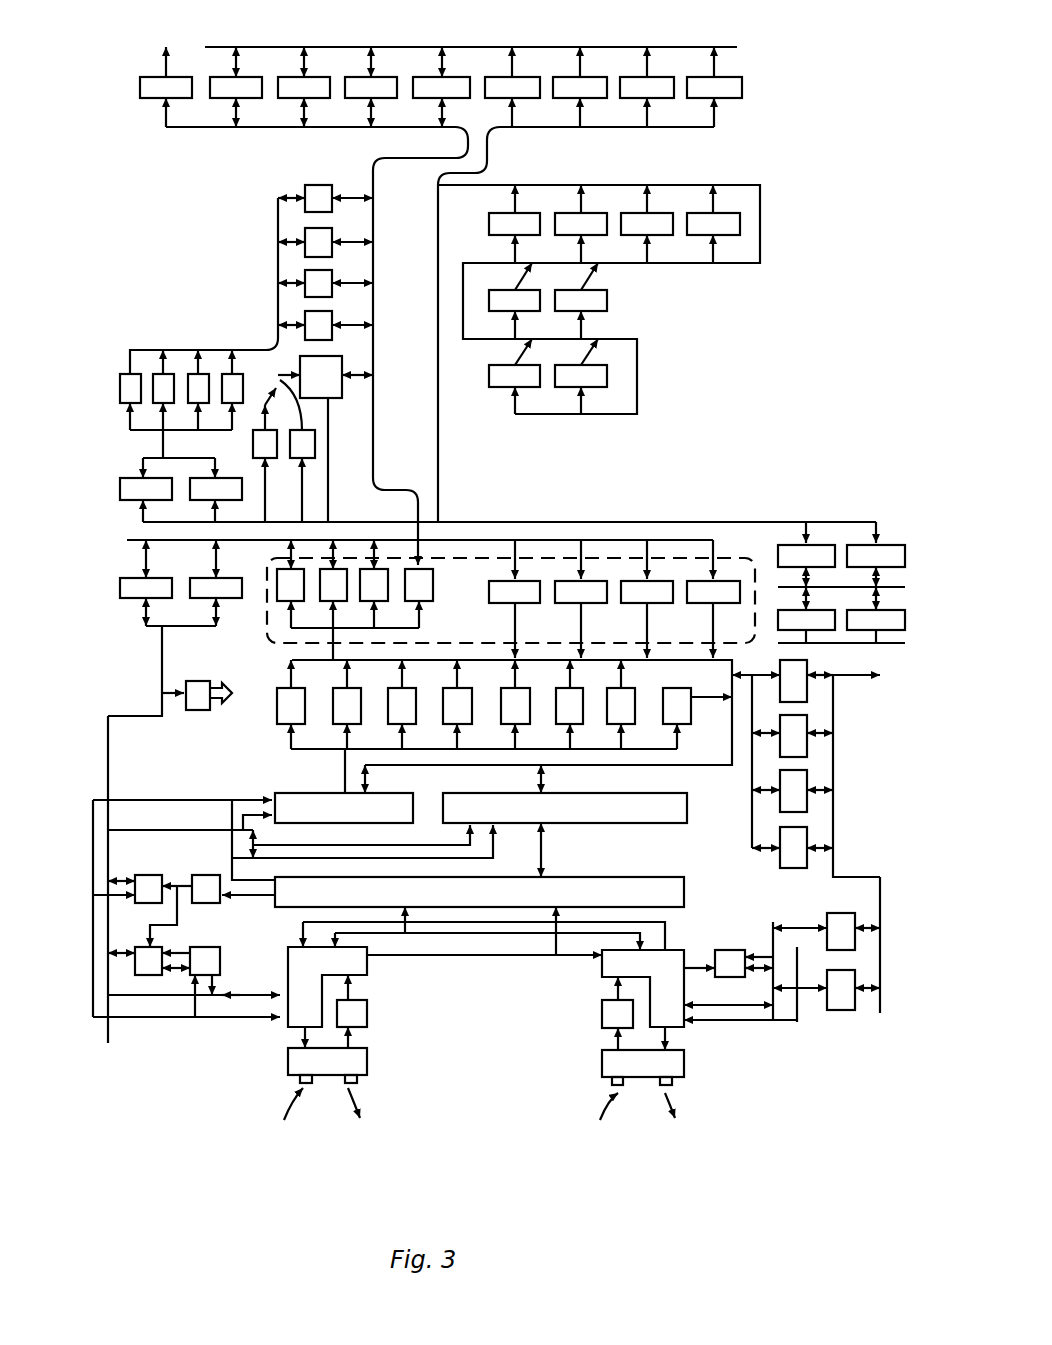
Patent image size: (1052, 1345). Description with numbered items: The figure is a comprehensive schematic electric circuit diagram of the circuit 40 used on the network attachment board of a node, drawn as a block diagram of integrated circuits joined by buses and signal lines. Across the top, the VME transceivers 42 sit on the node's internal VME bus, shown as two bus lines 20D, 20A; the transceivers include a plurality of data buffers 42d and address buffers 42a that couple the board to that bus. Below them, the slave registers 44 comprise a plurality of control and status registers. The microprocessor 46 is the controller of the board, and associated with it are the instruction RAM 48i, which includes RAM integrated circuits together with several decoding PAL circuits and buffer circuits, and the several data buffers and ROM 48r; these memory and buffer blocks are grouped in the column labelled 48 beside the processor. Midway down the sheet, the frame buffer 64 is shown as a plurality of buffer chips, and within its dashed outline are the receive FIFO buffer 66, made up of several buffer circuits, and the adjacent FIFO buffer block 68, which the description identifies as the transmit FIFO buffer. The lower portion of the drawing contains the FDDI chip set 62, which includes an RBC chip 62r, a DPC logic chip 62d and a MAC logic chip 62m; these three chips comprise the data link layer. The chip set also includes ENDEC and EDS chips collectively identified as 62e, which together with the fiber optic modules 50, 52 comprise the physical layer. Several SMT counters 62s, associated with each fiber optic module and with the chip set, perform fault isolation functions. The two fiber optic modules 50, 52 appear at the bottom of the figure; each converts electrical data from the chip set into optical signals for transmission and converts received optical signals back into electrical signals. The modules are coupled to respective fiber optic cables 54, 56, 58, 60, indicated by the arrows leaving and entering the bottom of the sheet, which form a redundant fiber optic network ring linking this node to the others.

The circuit 40 is at (107, 108).
The data bus 20D is at (296, 47).
The address bus 20A is at (620, 47).
The VME transceivers 42 is at (482, 94).
The address buffers 42a is at (730, 64).
The data buffers 42d is at (462, 70).
The slave registers 44 is at (772, 223).
The microprocessor 46 is at (336, 390).
The register column 48 is at (262, 238).
The instruction RAM 48i is at (176, 335).
The data buffers and ROM 48r is at (238, 440).
The frame buffer 64 is at (586, 575).
The receive FIFO buffer 66 is at (447, 590).
The register group 68 is at (572, 606).
The FDDI chip set 62 is at (493, 833).
The SMT counters 62s is at (160, 790).
The RBC chip 62r is at (292, 792).
The DPC logic chip 62d is at (717, 817).
The MAC logic chip 62m is at (684, 887).
The ENDEC and EDS chips 62e is at (370, 985).
The fiber optic module 50 is at (360, 1053).
The fiber optic module 52 is at (686, 1056).
The fiber optic cable 54 is at (298, 1080).
The fiber optic cable 56 is at (358, 1080).
The fiber optic cable 58 is at (608, 1080).
The fiber optic cable 60 is at (672, 1080).